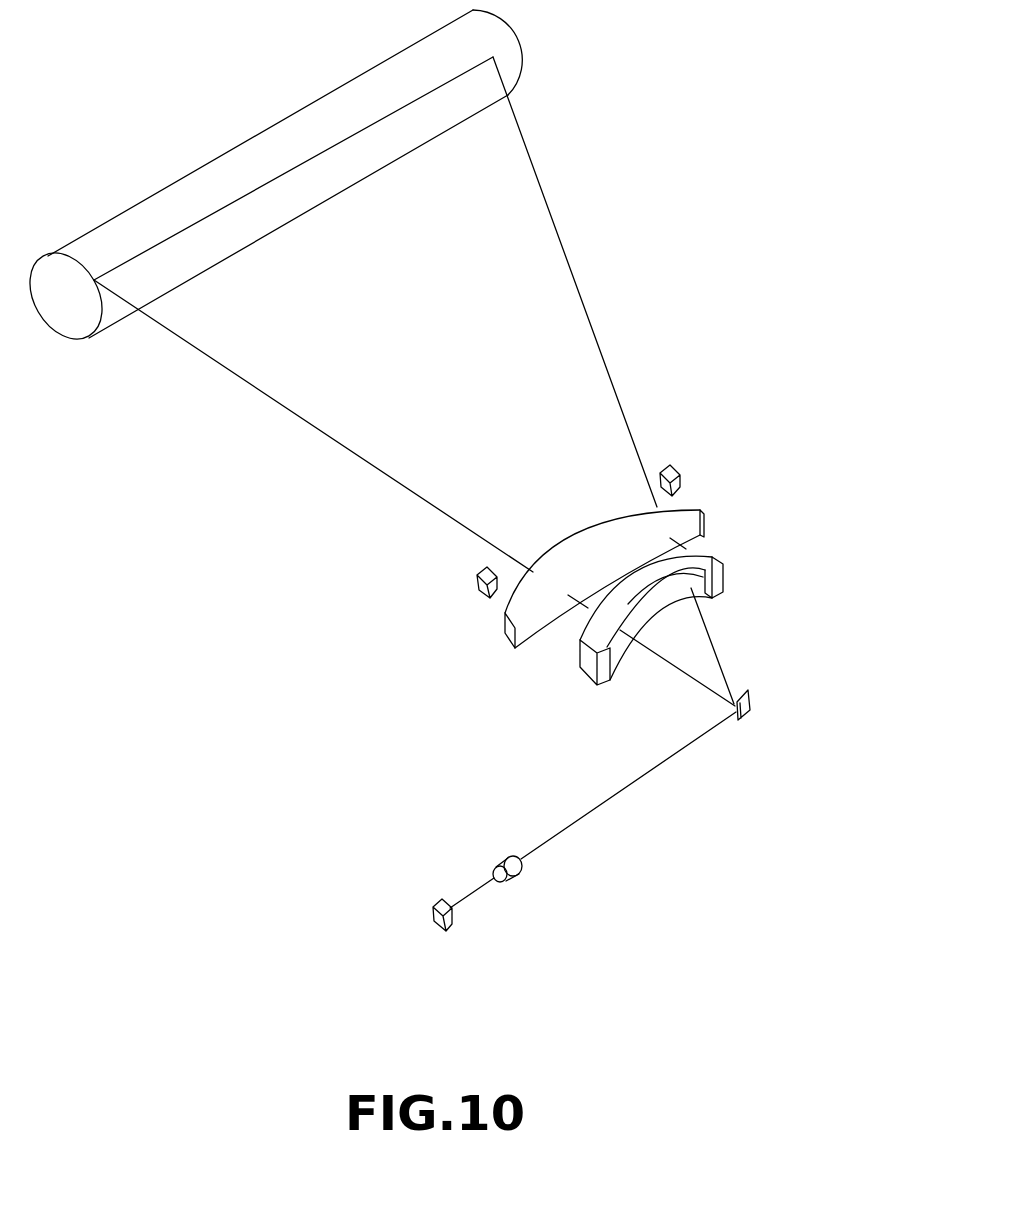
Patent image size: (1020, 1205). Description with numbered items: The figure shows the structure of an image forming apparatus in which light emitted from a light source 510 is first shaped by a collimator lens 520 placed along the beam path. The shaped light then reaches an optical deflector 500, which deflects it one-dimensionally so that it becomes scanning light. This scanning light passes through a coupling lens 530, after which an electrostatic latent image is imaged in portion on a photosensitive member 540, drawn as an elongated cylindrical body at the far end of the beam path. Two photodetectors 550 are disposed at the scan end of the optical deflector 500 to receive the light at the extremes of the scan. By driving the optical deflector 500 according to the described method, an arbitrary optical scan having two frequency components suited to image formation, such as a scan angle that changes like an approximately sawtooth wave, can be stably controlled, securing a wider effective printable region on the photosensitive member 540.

The photosensitive member 540 is at (518, 40).
The photodetectors 550 is at (660, 470).
The coupling lens 530 is at (715, 485).
The optical deflector 500 is at (750, 692).
The collimator lens 520 is at (520, 877).
The light source 510 is at (452, 923).